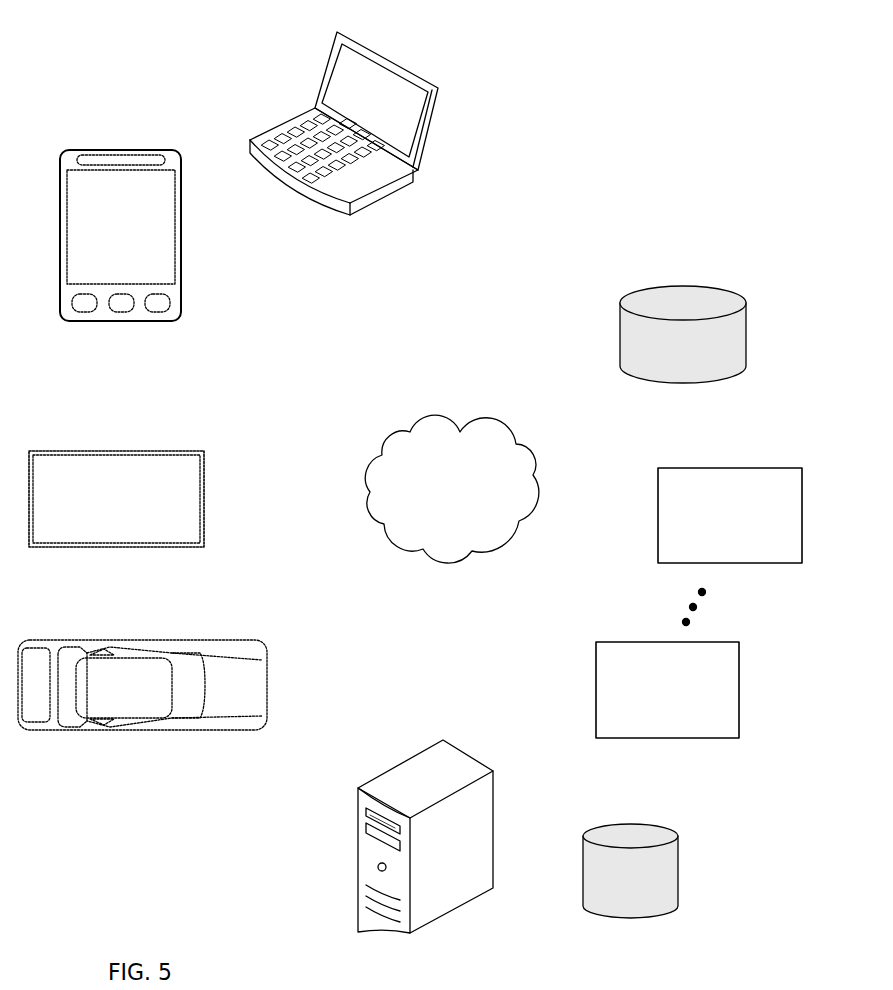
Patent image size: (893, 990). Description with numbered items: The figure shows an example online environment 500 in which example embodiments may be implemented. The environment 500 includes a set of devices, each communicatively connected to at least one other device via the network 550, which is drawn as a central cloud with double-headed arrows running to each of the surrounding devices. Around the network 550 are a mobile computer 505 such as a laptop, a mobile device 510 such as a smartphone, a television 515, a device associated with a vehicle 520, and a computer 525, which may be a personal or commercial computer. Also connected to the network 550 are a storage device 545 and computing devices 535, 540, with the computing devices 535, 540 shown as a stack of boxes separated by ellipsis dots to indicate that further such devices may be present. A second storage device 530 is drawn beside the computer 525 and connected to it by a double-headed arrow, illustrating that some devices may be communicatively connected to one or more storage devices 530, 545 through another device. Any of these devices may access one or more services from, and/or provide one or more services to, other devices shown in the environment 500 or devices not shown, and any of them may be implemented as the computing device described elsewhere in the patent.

The environment 500 is at (140, 27).
The mobile computer 505 is at (417, 413).
The mobile device 510 is at (378, 447).
The television 515 is at (370, 498).
The device associated with a vehicle 520 is at (392, 548).
The computer 525 is at (443, 565).
The storage device 530 is at (497, 870).
The computing device 535 is at (507, 553).
The computing device 540 is at (538, 502).
The storage device 545 is at (510, 427).
The network 550 is at (451, 489).